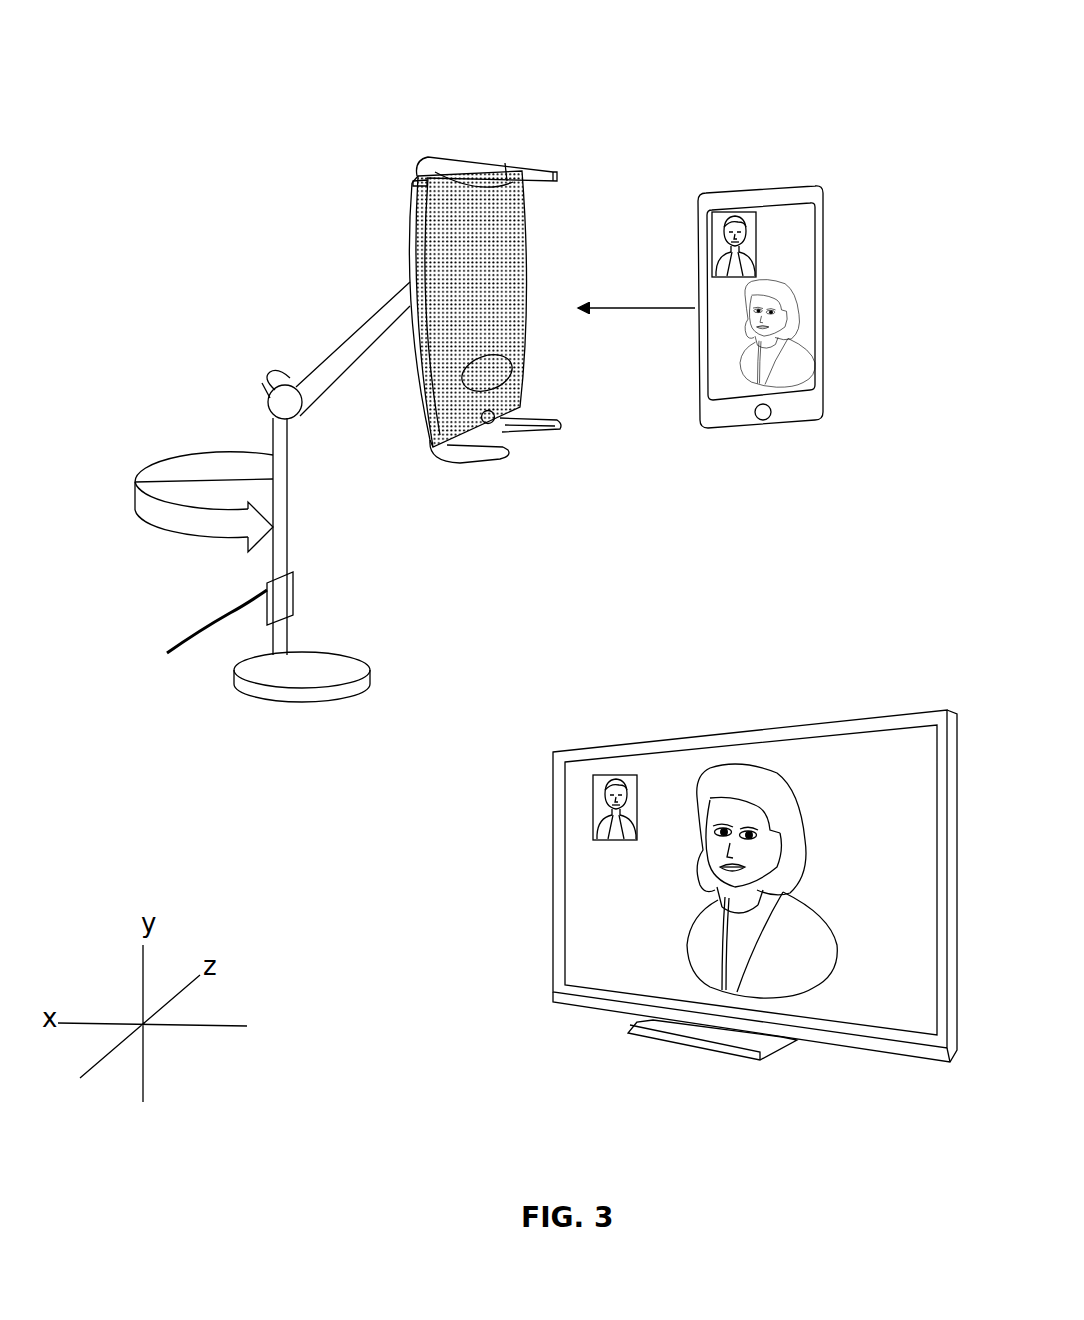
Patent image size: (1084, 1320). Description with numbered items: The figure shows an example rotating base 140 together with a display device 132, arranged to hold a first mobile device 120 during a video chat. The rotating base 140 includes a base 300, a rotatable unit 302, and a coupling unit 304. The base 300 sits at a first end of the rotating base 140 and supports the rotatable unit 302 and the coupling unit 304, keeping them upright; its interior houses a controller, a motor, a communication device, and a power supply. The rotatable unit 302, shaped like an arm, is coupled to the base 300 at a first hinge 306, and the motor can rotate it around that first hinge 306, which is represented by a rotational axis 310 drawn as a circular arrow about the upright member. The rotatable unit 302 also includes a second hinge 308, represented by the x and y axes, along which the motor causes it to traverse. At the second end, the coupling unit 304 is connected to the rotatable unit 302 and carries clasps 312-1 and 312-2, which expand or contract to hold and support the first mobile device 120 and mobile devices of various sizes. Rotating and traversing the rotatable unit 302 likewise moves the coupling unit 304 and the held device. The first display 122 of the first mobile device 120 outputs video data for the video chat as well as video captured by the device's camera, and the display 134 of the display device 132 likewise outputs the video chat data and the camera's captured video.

The first mobile device 120 is at (805, 430).
The first display 122 is at (797, 264).
The display device 132 is at (530, 1019).
The display 134 is at (595, 904).
The rotating base 140 is at (285, 717).
The base 300 is at (253, 692).
The rotatable unit 302 is at (290, 469).
The coupling unit 304 is at (410, 203).
The first hinge 306 is at (280, 640).
The second hinge 308 is at (262, 385).
The rotational axis 310 is at (148, 528).
The clasp 312-1 is at (553, 168).
The clasp 312-2 is at (563, 430).